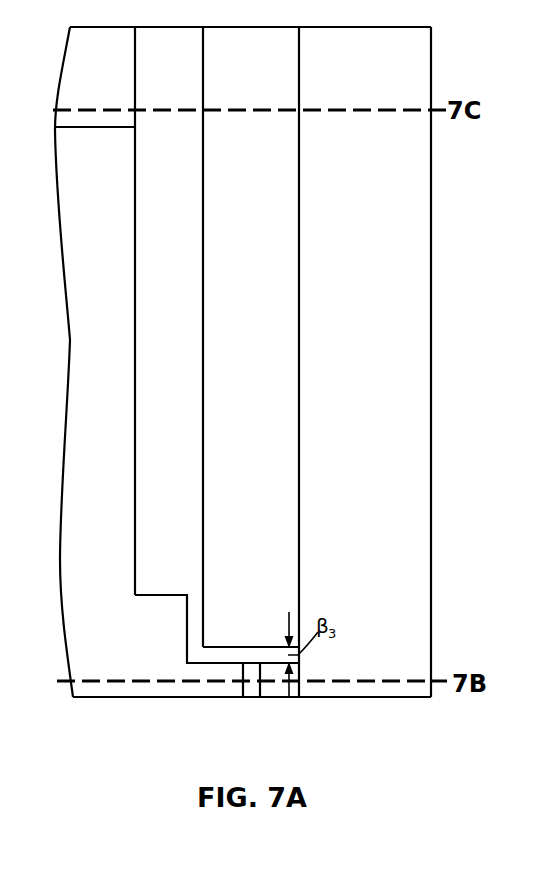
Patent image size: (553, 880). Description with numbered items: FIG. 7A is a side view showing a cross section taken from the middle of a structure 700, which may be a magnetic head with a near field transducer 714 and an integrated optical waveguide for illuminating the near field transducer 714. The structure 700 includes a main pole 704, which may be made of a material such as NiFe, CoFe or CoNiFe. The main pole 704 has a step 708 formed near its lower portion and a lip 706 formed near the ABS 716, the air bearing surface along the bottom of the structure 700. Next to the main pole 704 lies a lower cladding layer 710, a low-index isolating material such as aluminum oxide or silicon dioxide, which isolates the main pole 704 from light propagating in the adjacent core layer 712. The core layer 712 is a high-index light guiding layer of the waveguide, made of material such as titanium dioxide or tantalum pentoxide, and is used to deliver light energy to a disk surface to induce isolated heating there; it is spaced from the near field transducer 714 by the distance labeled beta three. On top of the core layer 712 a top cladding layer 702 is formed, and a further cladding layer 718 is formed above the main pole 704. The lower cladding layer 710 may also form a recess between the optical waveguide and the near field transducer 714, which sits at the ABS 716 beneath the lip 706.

The structure 700 is at (465, 320).
The top cladding layer 702 is at (347, 356).
The main pole 704 is at (85, 356).
The lip 706 is at (217, 667).
The step 708 is at (177, 603).
The lower cladding layer 710 is at (152, 356).
The core layer 712 is at (232, 356).
The near field transducer 714 is at (268, 702).
The ABS 716 is at (137, 700).
The cladding layer 718 is at (84, 87).